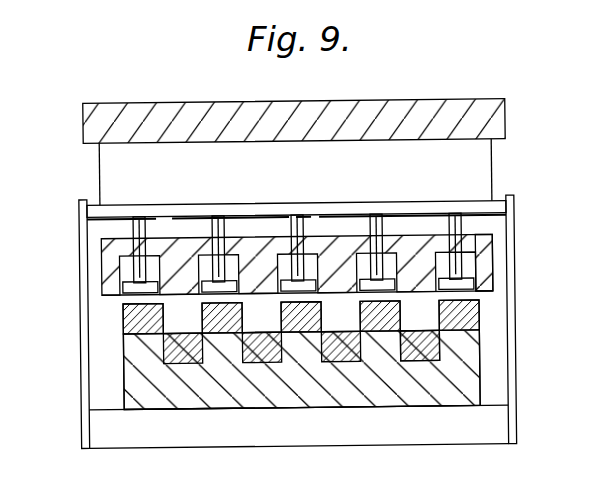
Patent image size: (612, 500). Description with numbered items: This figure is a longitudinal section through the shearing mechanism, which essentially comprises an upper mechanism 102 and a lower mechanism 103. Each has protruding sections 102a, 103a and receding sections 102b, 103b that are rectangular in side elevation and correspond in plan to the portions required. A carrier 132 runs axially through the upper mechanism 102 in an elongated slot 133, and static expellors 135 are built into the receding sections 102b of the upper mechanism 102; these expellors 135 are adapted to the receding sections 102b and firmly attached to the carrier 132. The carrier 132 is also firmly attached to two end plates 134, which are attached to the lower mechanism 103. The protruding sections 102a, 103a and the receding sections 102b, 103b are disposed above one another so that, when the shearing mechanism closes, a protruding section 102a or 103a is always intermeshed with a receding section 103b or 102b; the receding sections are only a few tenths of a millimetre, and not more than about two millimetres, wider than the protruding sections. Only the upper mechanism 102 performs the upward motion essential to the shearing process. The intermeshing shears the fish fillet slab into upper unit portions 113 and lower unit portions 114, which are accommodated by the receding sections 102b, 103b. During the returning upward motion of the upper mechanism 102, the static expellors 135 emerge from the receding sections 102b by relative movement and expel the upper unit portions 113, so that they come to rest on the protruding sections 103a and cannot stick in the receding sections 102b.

The elongated slot 133 is at (436, 152).
The carrier 132 is at (477, 209).
The end plates 134 is at (78, 206).
The upper mechanism 102 is at (108, 244).
The protruding sections of the upper mechanism 102a is at (496, 298).
The receding sections of the upper mechanism 102b is at (473, 257).
The static expellors 135 is at (299, 284).
The lower mechanism 103 is at (303, 398).
The protruding sections of the lower mechanism 103a is at (382, 350).
The receding sections of the lower mechanism 103b is at (440, 350).
The upper unit portions 113 is at (470, 320).
The lower unit portions 114 is at (432, 353).